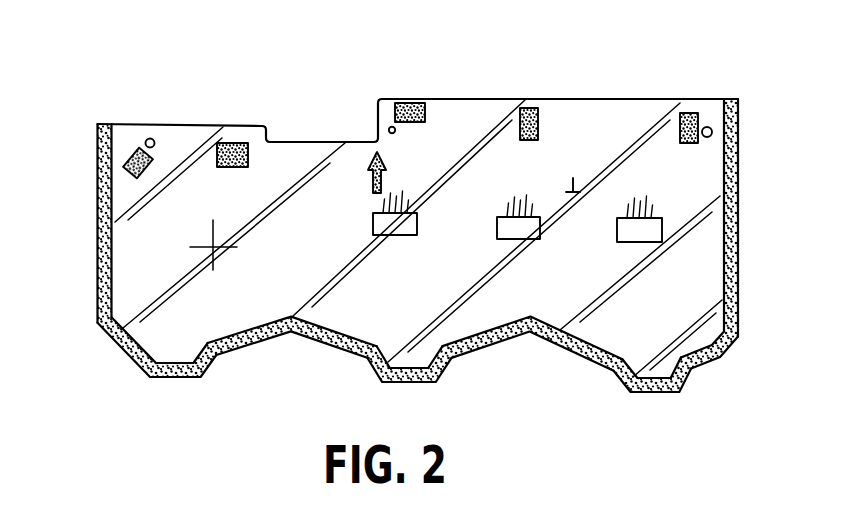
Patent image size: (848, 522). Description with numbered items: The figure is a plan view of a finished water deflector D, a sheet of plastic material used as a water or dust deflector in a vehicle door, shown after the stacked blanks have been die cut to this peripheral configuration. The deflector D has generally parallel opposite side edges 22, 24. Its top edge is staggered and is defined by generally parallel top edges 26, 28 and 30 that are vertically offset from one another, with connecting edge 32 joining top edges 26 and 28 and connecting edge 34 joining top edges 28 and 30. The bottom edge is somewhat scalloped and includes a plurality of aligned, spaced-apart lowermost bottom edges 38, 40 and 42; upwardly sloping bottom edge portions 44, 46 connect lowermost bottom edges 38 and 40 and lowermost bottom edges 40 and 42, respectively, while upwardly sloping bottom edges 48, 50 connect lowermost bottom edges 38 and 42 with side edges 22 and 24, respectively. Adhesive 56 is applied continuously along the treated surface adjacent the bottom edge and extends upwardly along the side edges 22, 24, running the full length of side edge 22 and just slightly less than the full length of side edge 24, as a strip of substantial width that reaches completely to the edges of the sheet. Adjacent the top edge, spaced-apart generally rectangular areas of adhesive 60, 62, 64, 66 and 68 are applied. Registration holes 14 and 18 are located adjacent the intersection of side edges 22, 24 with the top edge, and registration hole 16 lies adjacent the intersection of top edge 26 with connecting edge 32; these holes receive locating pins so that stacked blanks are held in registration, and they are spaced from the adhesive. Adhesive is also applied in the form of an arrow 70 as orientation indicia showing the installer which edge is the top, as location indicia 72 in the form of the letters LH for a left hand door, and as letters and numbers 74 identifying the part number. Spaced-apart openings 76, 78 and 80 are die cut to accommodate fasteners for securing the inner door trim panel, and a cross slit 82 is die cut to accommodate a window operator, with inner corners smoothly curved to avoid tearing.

The registration hole 14 is at (712, 130).
The registration hole 16 is at (394, 134).
The registration hole 18 is at (147, 140).
The side edge 22 is at (742, 205).
The side edge 24 is at (100, 300).
The top edge 26 is at (585, 98).
The top edge 28 is at (333, 142).
The top edge 30 is at (183, 123).
The connecting edge 32 is at (377, 110).
The connecting edge 34 is at (268, 126).
The lowermost bottom edge 38 is at (664, 392).
The lowermost bottom edge 40 is at (418, 382).
The lowermost bottom edge 42 is at (182, 378).
The upwardly sloping bottom edge portion 44 is at (560, 345).
The upwardly sloping bottom edge portion 46 is at (262, 350).
The upwardly sloping bottom edge 48 is at (712, 358).
The upwardly sloping bottom edge 50 is at (130, 357).
The adhesive 56 is at (730, 282).
The rectangular area of adhesive 60 is at (693, 113).
The rectangular area of adhesive 62 is at (528, 108).
The rectangular area of adhesive 64 is at (413, 104).
The rectangular area of adhesive 66 is at (218, 168).
The rectangular area of adhesive 68 is at (128, 150).
The arrow 70 is at (373, 192).
The location indicia 72 is at (522, 188).
The letters and numbers 74 is at (710, 168).
The opening 76 is at (640, 244).
The opening 78 is at (528, 241).
The opening 80 is at (405, 238).
The cross slit 82 is at (212, 247).
The water deflector D is at (95, 194).